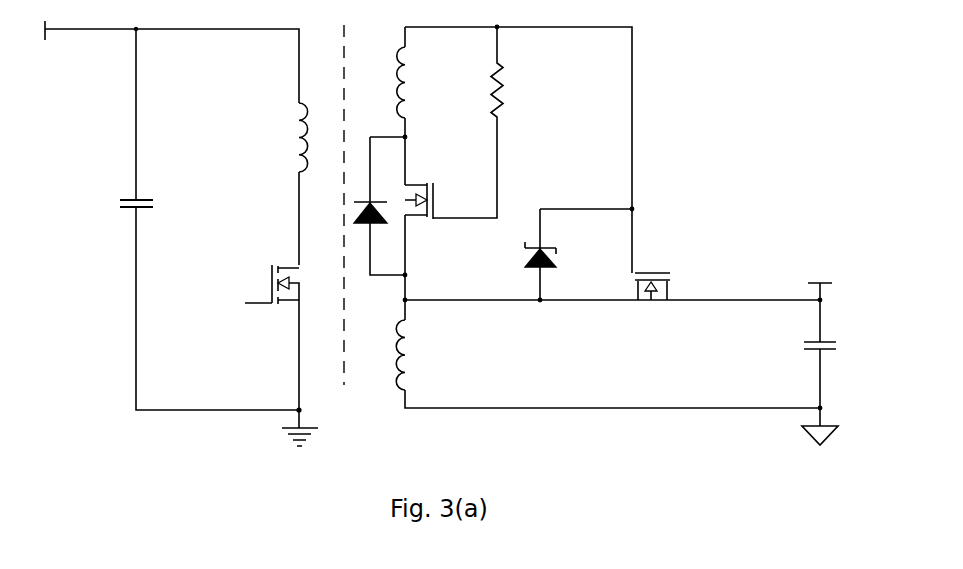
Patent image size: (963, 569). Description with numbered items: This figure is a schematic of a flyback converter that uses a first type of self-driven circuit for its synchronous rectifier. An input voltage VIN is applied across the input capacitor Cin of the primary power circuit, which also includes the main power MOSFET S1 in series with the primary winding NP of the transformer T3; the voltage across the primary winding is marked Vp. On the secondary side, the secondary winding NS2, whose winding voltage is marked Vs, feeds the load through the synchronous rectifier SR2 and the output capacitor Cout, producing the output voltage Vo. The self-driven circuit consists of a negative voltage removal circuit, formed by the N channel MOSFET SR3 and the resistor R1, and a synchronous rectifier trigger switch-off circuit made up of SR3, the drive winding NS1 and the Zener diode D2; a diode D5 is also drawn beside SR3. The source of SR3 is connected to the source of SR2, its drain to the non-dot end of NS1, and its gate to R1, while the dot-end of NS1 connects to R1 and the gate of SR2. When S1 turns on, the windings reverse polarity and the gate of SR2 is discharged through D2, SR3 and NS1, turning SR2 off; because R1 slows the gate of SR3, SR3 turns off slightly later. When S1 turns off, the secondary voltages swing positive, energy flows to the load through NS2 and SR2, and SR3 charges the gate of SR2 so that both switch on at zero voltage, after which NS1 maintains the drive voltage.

The input voltage VIN is at (31, 30).
The input capacitor Cin is at (153, 208).
The primary winding NP is at (312, 137).
The primary winding voltage Vp is at (261, 138).
The main power MOSFET S1 is at (256, 284).
The transformer T3 is at (360, 91).
The drive winding NS1 is at (425, 79).
The resistor R1 is at (480, 122).
The N channel MOSFET (auxiliary rectifier) SR3 is at (428, 217).
The diode D5 is at (379, 206).
The Zener diode D2 is at (578, 254).
The synchronous rectifier MOSFET SR2 is at (652, 299).
The output voltage Vo is at (820, 284).
The output capacitor Cout is at (795, 372).
The secondary winding NS2 is at (377, 355).
The secondary winding voltage Vs is at (425, 356).